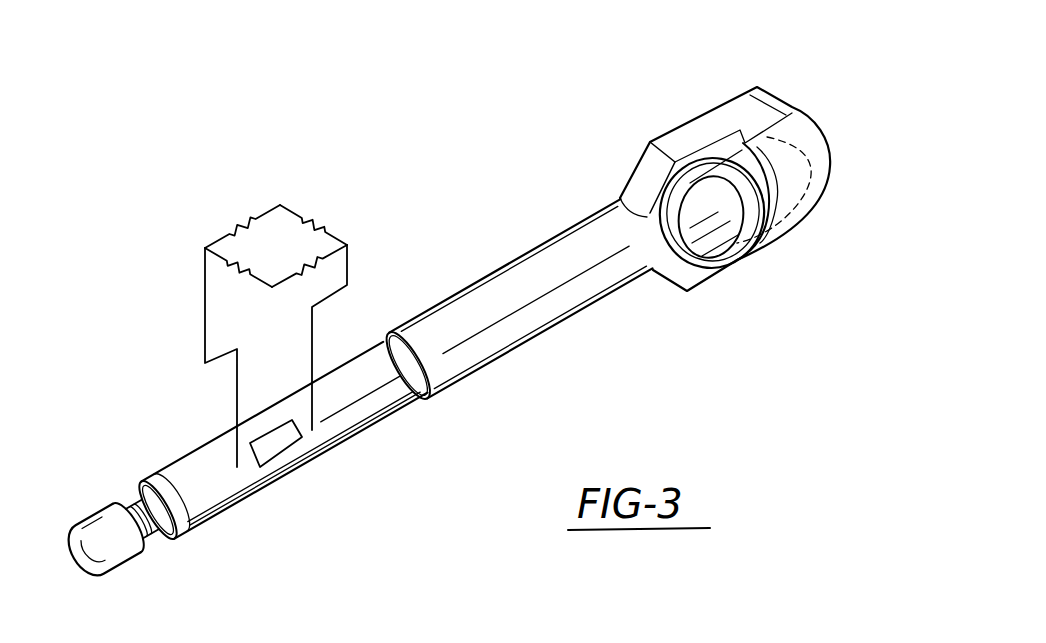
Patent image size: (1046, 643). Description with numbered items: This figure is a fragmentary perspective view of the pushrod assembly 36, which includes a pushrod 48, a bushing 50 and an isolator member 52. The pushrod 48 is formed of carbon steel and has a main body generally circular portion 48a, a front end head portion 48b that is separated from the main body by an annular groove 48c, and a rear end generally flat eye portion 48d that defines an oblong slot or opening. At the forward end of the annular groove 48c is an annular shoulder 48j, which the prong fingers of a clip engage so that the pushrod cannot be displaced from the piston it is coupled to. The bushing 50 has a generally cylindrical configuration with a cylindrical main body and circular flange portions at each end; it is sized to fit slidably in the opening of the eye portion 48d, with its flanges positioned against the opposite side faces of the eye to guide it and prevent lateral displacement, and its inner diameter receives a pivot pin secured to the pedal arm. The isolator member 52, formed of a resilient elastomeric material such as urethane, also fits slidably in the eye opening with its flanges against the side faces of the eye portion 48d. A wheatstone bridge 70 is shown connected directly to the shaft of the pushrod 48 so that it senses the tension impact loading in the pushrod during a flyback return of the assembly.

The pushrod assembly 36 is at (545, 208).
The pushrod 48 is at (391, 424).
The main body generally circular portion 48a is at (352, 354).
The front end head portion 48b is at (90, 510).
The annular groove 48c is at (140, 493).
The rear end generally flat eye portion 48d is at (830, 146).
The annular shoulder 48j is at (140, 547).
The bushing 50 is at (703, 167).
The isolator member 52 is at (773, 130).
The wheatstone bridge 70 is at (222, 221).